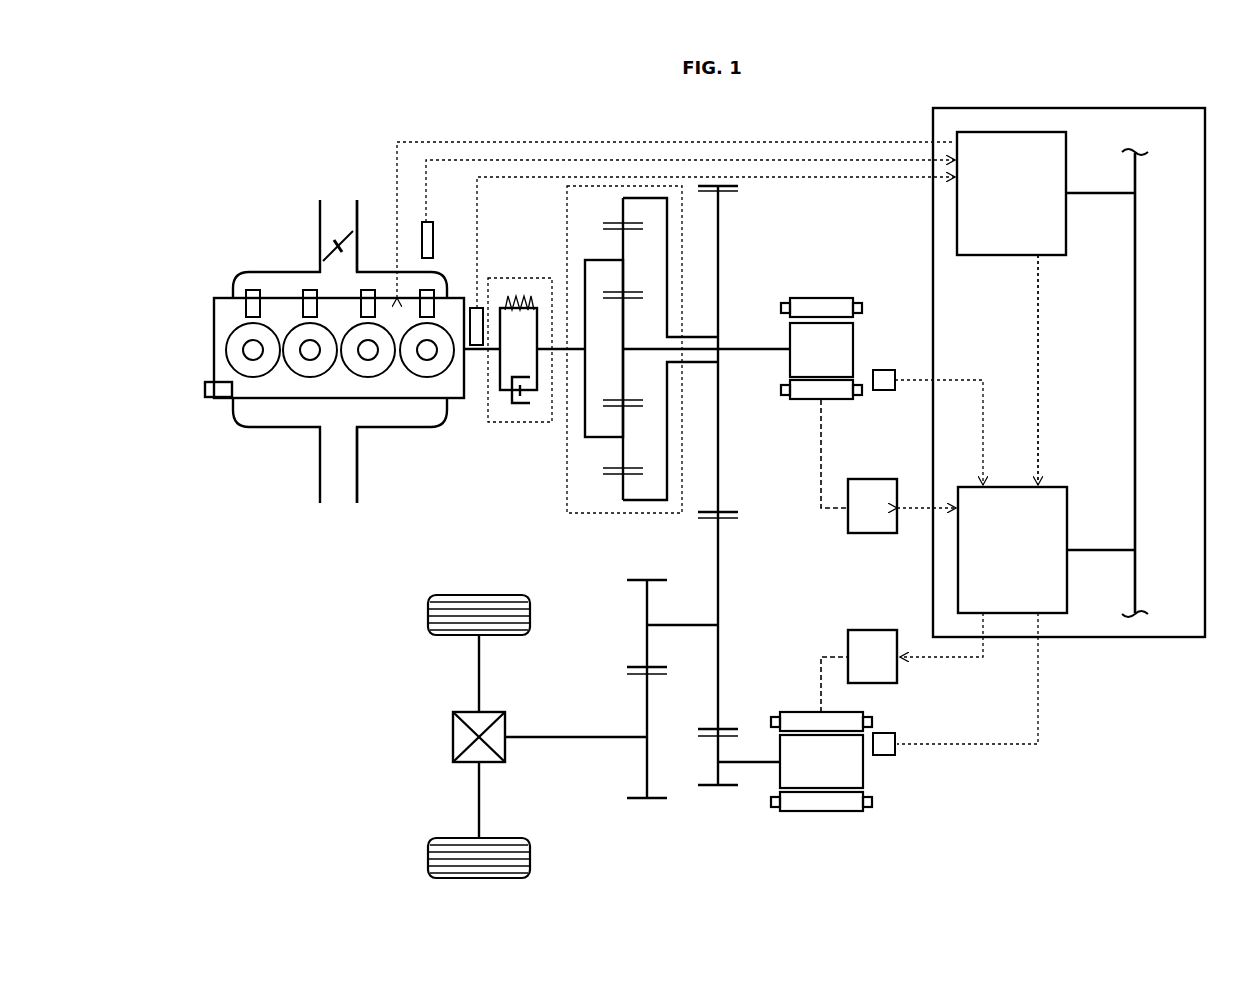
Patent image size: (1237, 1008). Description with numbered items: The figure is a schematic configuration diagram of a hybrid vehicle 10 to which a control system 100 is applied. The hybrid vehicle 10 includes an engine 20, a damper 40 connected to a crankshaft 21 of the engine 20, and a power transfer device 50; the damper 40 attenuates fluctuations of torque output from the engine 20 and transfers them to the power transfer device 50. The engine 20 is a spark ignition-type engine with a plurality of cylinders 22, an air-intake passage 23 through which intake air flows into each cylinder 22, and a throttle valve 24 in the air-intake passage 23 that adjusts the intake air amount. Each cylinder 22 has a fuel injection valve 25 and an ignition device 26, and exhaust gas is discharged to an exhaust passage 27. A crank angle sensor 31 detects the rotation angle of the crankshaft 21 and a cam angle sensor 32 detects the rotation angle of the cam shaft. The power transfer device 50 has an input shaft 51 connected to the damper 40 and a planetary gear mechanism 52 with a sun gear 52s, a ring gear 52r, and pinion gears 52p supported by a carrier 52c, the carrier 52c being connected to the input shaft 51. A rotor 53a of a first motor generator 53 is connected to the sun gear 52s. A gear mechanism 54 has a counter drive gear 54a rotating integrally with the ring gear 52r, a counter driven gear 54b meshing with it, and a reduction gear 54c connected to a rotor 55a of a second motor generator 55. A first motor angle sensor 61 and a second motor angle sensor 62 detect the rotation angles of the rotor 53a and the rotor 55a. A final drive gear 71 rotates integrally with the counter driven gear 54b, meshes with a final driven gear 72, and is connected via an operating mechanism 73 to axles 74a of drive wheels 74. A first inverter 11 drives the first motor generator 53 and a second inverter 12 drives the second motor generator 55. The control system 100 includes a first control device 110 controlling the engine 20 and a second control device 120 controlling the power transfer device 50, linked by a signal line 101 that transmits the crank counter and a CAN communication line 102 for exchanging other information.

The hybrid vehicle 10 is at (378, 656).
The first inverter 11 is at (874, 534).
The second inverter 12 is at (870, 630).
The engine 20 is at (228, 260).
The crankshaft 21 is at (474, 360).
The cylinders 22 is at (254, 375).
The air-intake passage 23 is at (358, 222).
The throttle valve 24 is at (330, 252).
The fuel injection valve 25 is at (296, 307).
The ignition device 26 is at (304, 358).
The exhaust passage 27 is at (358, 466).
The crank angle sensor 31 is at (478, 306).
The cam angle sensor 32 is at (435, 235).
The damper 40 is at (495, 424).
The power transfer device 50 is at (830, 314).
The input shaft 51 is at (561, 349).
The planetary gear mechanism 52 is at (562, 200).
The carrier 52c is at (601, 260).
The pinion gears 52p is at (627, 249).
The ring gear 52r is at (621, 484).
The sun gear 52s is at (621, 371).
The first motor generator 53 is at (778, 300).
The rotor 53a is at (855, 346).
The gear mechanism 54 is at (743, 485).
The counter drive gear 54a is at (720, 450).
The counter driven gear 54b is at (722, 542).
The reduction gear 54c is at (714, 747).
The second motor generator 55 is at (848, 781).
The rotor 55a is at (865, 770).
The first motor angle sensor 61 is at (886, 392).
The second motor angle sensor 62 is at (885, 734).
The final drive gear 71 is at (644, 592).
The final driven gear 72 is at (644, 686).
The operating mechanism 73 is at (452, 736).
The drive wheels 74 is at (428, 609).
The axles 74a is at (481, 670).
The control system 100 is at (1118, 638).
The signal line 101 is at (1040, 368).
The CAN communication line 102 is at (1137, 378).
The first control device 110 is at (1068, 152).
The second control device 120 is at (1068, 507).